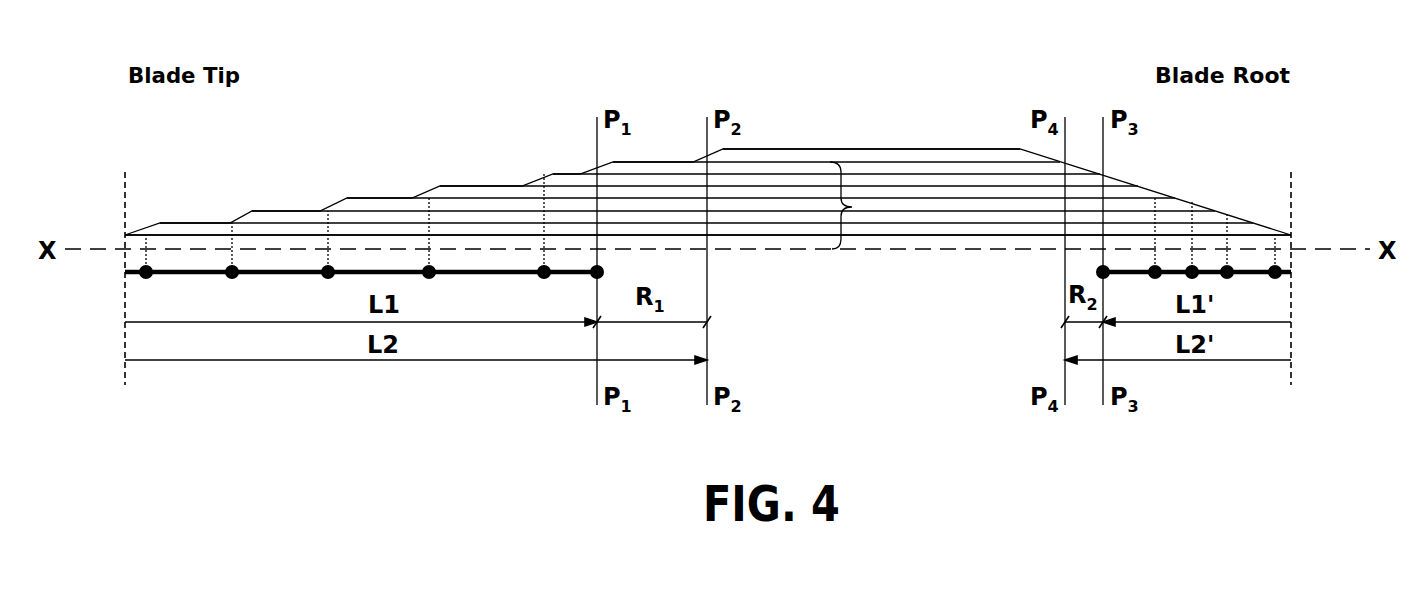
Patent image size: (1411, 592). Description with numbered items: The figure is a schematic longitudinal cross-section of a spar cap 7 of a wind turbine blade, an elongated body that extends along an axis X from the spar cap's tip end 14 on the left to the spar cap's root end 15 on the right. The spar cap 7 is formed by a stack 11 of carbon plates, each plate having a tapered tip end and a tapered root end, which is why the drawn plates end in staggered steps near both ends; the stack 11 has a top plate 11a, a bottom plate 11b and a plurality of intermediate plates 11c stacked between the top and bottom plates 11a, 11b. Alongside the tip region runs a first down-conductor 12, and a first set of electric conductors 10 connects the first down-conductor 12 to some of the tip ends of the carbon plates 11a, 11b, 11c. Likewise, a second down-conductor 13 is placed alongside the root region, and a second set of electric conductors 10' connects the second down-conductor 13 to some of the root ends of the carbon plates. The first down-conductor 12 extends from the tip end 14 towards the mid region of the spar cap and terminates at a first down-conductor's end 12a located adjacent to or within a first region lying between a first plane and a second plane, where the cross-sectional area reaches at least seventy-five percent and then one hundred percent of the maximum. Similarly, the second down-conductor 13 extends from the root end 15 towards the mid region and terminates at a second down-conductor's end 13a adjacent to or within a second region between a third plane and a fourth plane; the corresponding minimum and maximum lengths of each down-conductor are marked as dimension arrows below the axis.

The spar cap 7 is at (550, 127).
The first set of electric conductors 10 is at (345, 192).
The second set of electric conductors 10' is at (1215, 195).
The stack of carbon plates 11 is at (982, 118).
The top plate 11a is at (776, 150).
The bottom plate 11b is at (930, 228).
The intermediate plates 11c is at (854, 205).
The first down-conductor 12 is at (275, 273).
The first down-conductor's end 12a is at (596, 275).
The second down-conductor 13 is at (1250, 274).
The second down-conductor's end 13a is at (1106, 276).
The tip end 14 is at (130, 234).
The root end 15 is at (1279, 232).